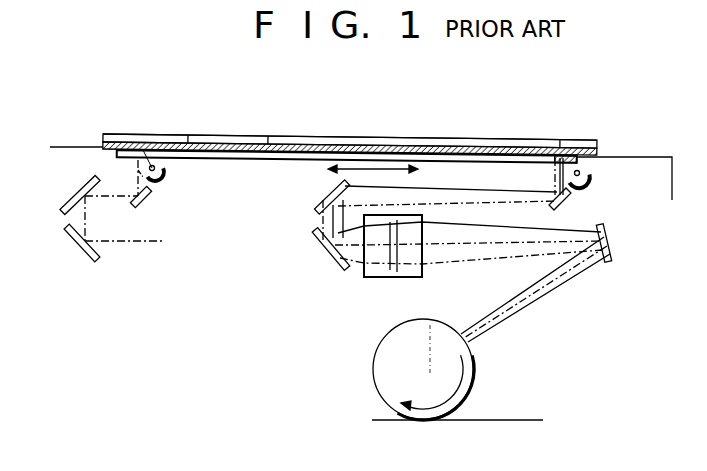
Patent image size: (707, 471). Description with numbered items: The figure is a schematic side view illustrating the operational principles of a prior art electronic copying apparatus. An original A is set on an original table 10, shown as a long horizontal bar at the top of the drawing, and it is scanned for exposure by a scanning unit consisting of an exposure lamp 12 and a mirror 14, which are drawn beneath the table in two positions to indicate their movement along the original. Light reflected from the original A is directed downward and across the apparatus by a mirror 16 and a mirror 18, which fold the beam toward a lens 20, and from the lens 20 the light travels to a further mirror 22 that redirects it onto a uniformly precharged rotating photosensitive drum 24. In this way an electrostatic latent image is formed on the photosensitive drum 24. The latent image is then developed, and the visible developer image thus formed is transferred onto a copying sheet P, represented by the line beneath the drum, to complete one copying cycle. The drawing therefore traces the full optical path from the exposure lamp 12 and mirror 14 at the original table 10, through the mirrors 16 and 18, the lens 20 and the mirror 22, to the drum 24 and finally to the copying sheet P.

The original A is at (266, 134).
The original table 10 is at (240, 158).
The exposure lamp 12 is at (167, 176).
The mirror 14 is at (150, 203).
The mirror 16 is at (75, 188).
The mirror 18 is at (69, 236).
The lens 20 is at (377, 278).
The mirror 22 is at (612, 245).
The photosensitive drum 24 is at (473, 365).
The copying sheet P is at (508, 424).